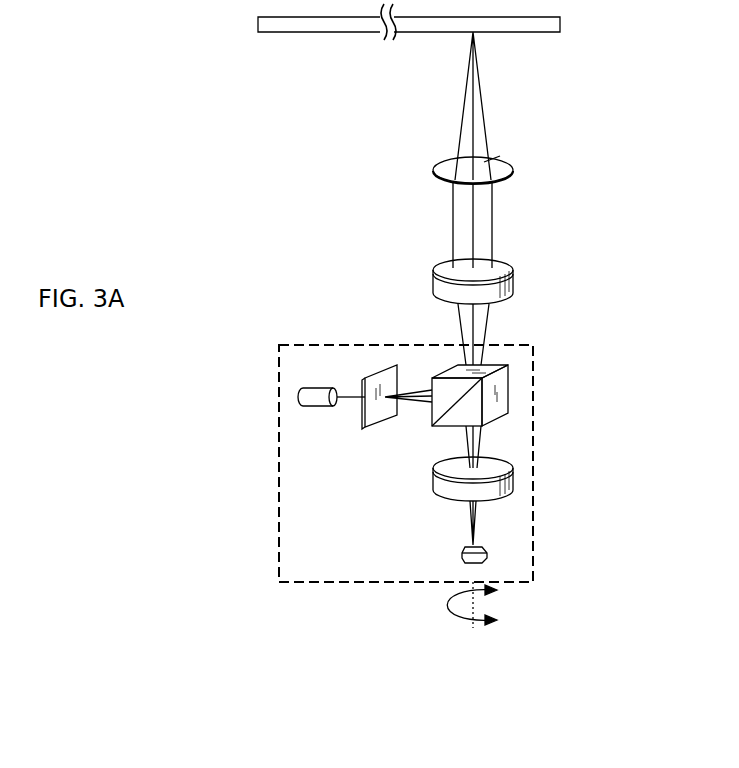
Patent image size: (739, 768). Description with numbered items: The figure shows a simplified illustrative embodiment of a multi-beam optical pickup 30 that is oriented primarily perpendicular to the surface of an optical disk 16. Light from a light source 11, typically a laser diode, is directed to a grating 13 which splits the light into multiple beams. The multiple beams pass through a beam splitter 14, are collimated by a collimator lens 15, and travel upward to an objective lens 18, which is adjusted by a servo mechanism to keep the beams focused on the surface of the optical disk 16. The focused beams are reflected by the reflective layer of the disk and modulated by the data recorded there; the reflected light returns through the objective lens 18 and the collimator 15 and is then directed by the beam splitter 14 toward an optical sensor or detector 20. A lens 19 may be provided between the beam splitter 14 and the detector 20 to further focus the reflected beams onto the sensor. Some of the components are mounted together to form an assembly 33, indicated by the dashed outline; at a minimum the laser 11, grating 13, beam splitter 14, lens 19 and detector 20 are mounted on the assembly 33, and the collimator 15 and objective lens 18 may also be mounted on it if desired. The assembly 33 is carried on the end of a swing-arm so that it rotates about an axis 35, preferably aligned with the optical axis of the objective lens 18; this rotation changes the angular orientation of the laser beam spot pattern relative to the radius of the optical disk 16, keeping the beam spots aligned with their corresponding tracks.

The light source 11 is at (305, 388).
The grating 13 is at (392, 364).
The beam splitter 14 is at (508, 365).
The collimator lens 15 is at (437, 280).
The optical disk 16 is at (357, 33).
The objective lens 18 is at (514, 172).
The lens 19 is at (433, 488).
The optical sensor 20 is at (462, 556).
The optical pickup 30 is at (206, 133).
The assembly 33 is at (534, 476).
The axis 35 is at (478, 608).